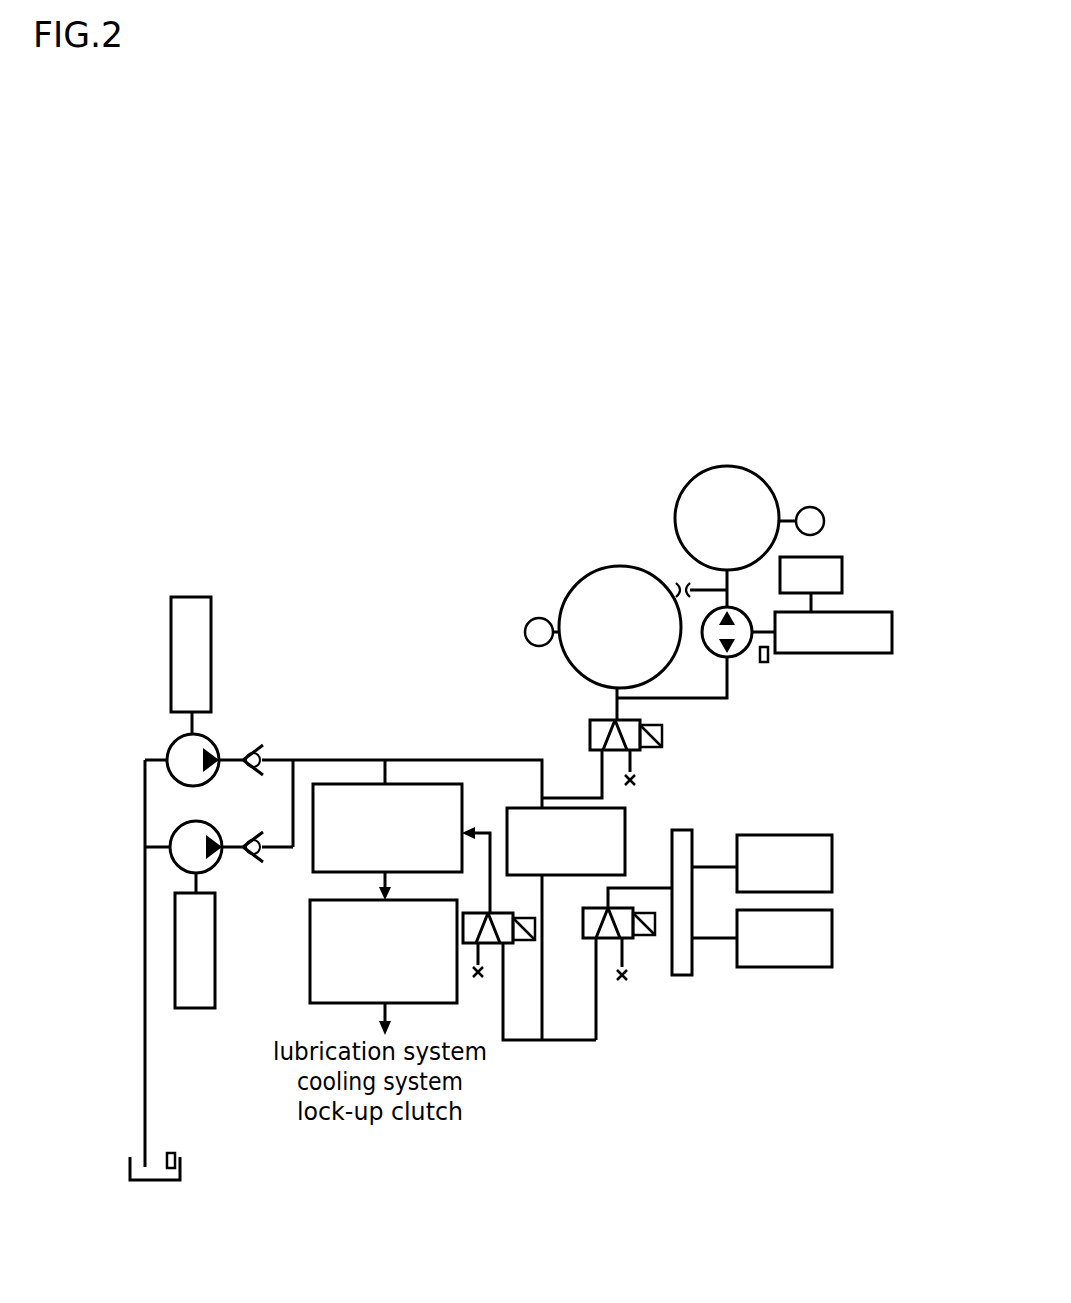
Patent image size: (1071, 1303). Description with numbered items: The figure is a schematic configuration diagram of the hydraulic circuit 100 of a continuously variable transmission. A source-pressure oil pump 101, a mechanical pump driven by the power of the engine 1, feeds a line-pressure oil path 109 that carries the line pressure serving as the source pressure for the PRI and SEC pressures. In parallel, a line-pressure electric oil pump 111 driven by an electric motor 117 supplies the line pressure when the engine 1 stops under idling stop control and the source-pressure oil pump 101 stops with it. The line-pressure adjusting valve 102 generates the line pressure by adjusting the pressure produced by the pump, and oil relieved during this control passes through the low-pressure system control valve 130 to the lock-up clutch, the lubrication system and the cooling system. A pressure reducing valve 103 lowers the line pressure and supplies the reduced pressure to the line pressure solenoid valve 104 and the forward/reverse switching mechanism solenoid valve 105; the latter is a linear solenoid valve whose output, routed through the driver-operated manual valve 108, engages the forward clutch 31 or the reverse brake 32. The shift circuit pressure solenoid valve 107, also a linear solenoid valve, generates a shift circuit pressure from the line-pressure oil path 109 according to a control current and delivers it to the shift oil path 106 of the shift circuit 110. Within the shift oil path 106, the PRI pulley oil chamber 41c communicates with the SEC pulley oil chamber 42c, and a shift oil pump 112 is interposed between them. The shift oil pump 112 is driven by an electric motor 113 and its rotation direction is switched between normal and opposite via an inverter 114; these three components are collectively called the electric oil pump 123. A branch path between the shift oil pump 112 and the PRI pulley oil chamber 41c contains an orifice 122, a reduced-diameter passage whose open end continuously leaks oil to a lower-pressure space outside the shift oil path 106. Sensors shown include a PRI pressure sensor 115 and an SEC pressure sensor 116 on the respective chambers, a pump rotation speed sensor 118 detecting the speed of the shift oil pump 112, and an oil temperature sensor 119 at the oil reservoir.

The engine 1 is at (211, 648).
The hydraulic circuit 100 is at (110, 992).
The source-pressure oil pump 101 is at (172, 743).
The line-pressure adjusting valve 102 is at (463, 803).
The pressure reducing valve 103 is at (625, 816).
The line pressure solenoid valve 104 is at (488, 913).
The forward/reverse switching mechanism solenoid valve 105 is at (585, 917).
The shift oil path 106 is at (695, 701).
The shift circuit pressure solenoid valve 107 is at (598, 719).
The manual valve 108 is at (682, 975).
The line-pressure oil path 109 is at (461, 760).
The shift circuit 110 is at (553, 489).
The line-pressure electric oil pump 111 is at (213, 865).
The shift oil pump 112 is at (742, 655).
The electric motor 113 is at (858, 653).
The inverter 114 is at (842, 565).
The PRI pressure sensor 115 is at (818, 508).
The SEC pressure sensor 116 is at (529, 621).
The electric motor 117 is at (215, 957).
The pump rotation speed sensor 118 is at (766, 662).
The oil temperature sensor 119 is at (171, 1153).
The orifice 122 is at (680, 581).
The electric oil pump 123 is at (878, 594).
The low-pressure system control valve 130 is at (310, 937).
The forward clutch 31 is at (812, 835).
The reverse brake 32 is at (812, 967).
The PRI pulley oil chamber 41c is at (689, 480).
The SEC pulley oil chamber 42c is at (578, 584).